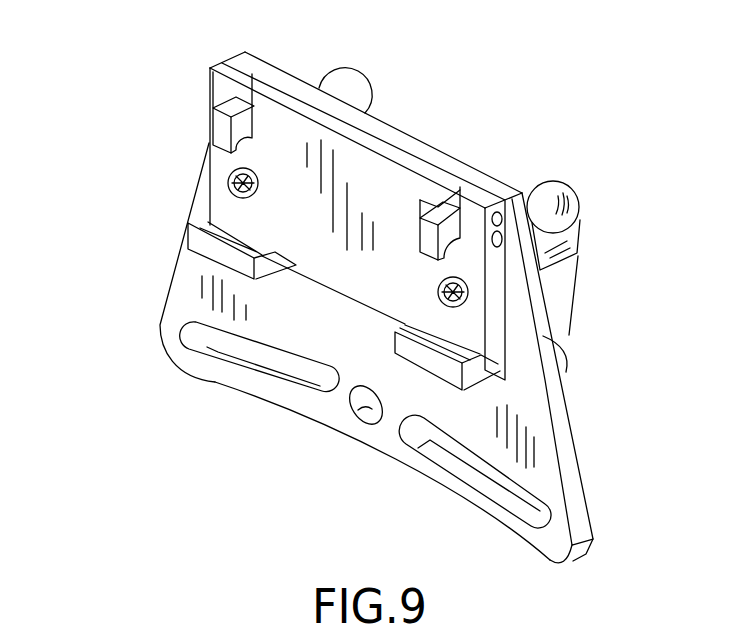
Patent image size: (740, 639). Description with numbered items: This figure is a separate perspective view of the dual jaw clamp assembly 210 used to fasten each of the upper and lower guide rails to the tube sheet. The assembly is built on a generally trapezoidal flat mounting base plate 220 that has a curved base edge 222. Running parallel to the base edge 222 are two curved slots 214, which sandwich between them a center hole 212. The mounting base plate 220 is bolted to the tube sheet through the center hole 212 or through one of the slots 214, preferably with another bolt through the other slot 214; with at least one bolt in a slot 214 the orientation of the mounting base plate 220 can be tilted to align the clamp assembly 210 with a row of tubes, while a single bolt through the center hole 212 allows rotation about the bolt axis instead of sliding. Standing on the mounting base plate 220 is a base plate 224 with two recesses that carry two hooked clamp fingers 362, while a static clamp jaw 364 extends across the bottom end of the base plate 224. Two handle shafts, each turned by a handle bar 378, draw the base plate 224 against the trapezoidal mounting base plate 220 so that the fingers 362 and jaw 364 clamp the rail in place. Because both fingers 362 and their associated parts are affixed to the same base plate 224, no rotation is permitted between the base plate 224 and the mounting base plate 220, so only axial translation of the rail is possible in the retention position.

The dual jaw clamp assembly 210 is at (143, 110).
The center hole 212 is at (358, 407).
The curved slots 214 is at (240, 363).
The trapezoidal flat mounting base plate 220 is at (573, 442).
The curved base edge 222 is at (287, 405).
The base plate 224 is at (497, 305).
The hooked clamp finger 362 is at (233, 96).
The static clamp jaw 364 is at (195, 242).
The handle bar 378 is at (363, 90).